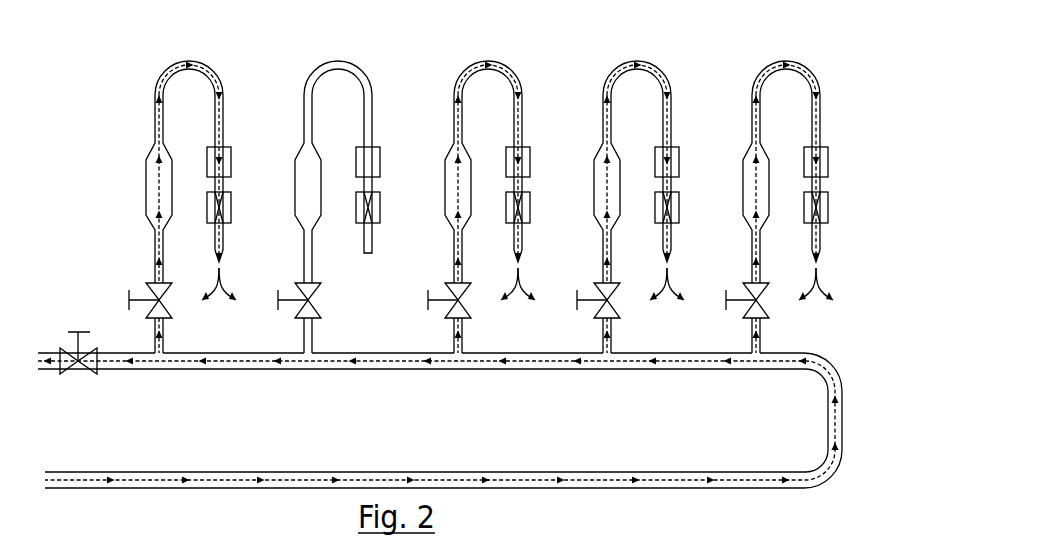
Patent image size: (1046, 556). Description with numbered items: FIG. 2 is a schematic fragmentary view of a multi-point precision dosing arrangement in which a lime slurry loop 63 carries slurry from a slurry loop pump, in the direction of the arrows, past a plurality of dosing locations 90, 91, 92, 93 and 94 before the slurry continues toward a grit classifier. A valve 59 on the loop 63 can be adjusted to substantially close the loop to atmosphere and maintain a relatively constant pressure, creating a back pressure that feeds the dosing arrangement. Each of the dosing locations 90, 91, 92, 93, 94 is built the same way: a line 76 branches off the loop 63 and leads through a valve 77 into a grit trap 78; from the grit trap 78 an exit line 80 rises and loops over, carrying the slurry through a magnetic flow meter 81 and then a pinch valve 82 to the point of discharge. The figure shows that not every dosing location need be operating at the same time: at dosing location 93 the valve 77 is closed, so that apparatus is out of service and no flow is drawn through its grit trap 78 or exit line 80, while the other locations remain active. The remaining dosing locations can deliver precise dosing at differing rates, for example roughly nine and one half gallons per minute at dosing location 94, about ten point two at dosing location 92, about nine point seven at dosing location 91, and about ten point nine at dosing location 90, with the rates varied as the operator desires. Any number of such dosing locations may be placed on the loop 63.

The valve 59 is at (88, 368).
The lime slurry loop 63 is at (737, 489).
The line 76 is at (761, 346).
The valve 77 is at (766, 288).
The grit trap 78 is at (743, 197).
The exit line 80 is at (786, 61).
The magnetic flow meter 81 is at (828, 165).
The pinch valve 82 is at (828, 210).
The dosing location 90 is at (794, 196).
The dosing location 91 is at (684, 331).
The dosing location 92 is at (534, 331).
The dosing location 93 is at (321, 290).
The dosing location 94 is at (234, 331).